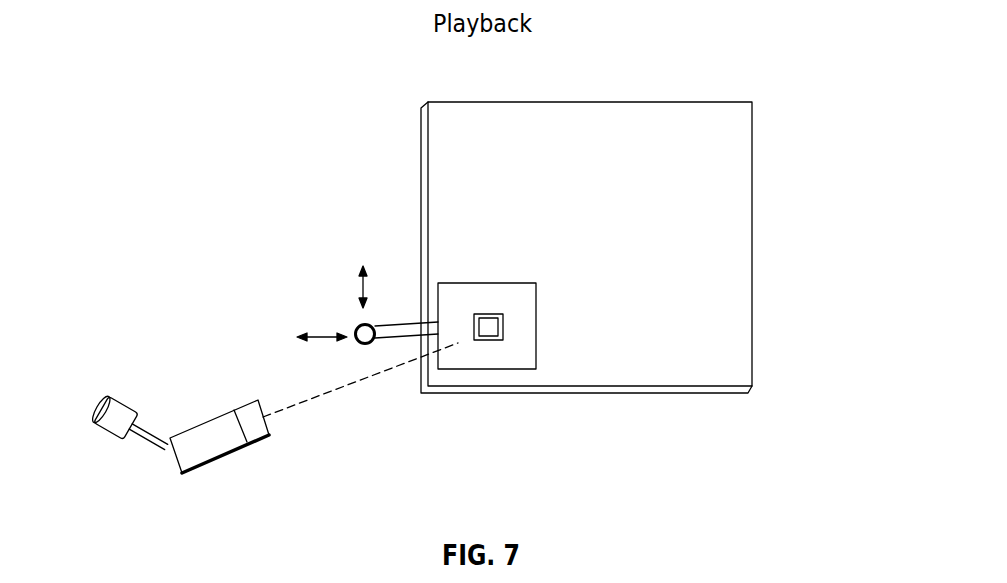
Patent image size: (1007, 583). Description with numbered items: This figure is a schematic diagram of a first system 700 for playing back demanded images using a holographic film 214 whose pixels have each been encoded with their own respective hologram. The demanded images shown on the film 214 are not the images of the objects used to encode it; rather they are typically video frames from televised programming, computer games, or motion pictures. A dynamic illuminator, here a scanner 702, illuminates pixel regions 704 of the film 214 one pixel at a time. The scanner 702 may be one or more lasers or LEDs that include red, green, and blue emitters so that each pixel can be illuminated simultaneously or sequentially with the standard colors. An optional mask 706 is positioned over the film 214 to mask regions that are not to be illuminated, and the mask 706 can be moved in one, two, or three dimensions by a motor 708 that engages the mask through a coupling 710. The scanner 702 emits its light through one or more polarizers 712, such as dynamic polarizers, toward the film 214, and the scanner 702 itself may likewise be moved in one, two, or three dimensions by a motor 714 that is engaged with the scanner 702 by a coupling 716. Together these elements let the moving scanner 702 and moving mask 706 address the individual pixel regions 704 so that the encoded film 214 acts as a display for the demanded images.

The first system 700 is at (356, 152).
The holographic film 214 is at (753, 185).
The scanner 702 is at (223, 447).
The pixel regions 704 is at (507, 322).
The mask 706 is at (532, 338).
The motor 708 is at (372, 325).
The coupling 710 is at (387, 340).
The polarizer 712 is at (263, 437).
The motor 714 is at (102, 432).
The coupling 716 is at (153, 425).